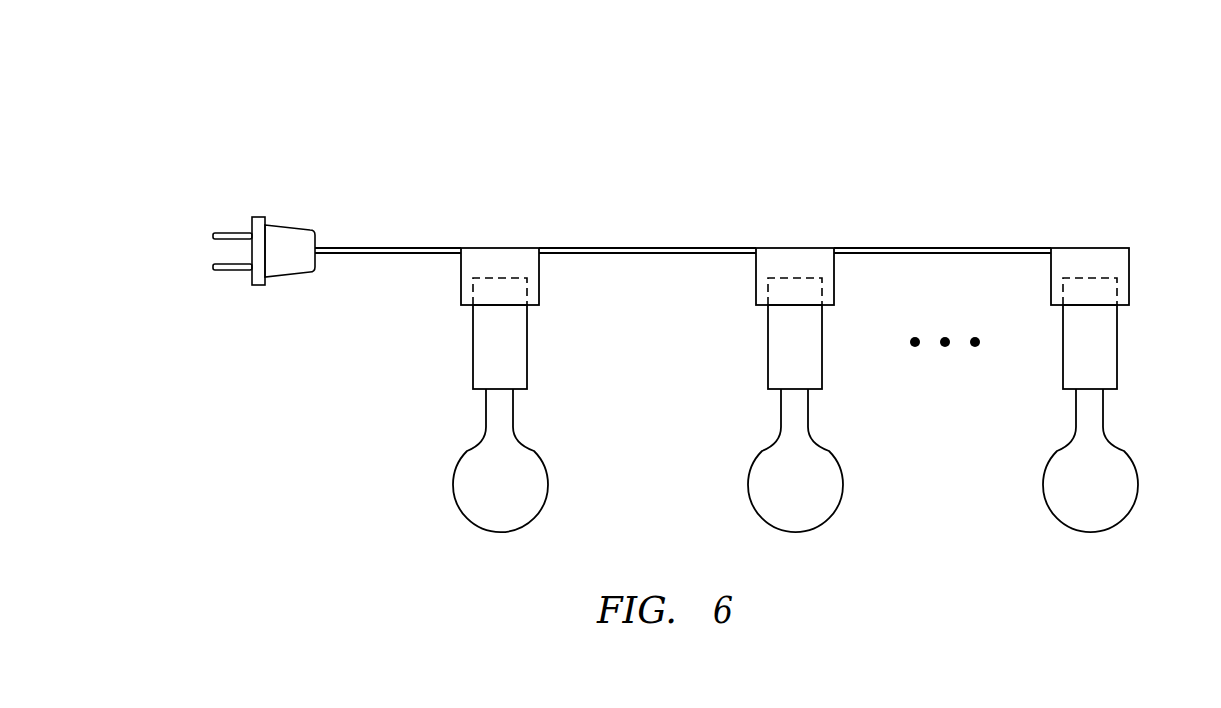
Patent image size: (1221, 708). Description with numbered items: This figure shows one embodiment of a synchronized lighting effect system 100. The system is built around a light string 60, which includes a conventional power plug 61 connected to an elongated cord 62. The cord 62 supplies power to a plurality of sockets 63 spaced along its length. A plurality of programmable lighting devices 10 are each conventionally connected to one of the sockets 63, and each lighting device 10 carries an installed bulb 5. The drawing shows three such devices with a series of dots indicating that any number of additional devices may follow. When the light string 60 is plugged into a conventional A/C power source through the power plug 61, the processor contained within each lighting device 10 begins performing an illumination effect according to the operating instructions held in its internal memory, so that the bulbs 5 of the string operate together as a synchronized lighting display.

The synchronized lighting effect system 100 is at (654, 109).
The light string 60 is at (192, 216).
The power plug 61 is at (287, 238).
The elongated cord 62 is at (393, 255).
The socket 63 is at (503, 263).
The programmable lighting device 10 is at (1148, 380).
The bulb 5 is at (1102, 495).